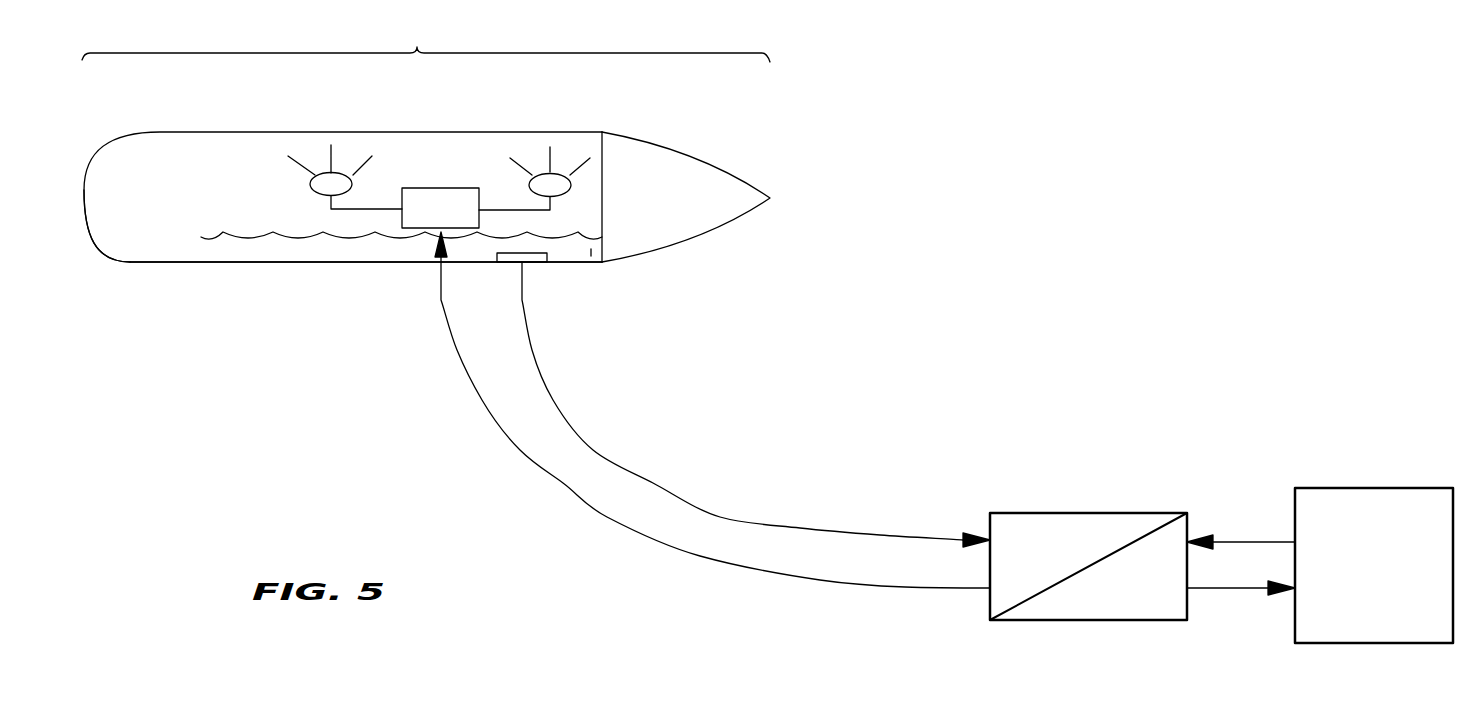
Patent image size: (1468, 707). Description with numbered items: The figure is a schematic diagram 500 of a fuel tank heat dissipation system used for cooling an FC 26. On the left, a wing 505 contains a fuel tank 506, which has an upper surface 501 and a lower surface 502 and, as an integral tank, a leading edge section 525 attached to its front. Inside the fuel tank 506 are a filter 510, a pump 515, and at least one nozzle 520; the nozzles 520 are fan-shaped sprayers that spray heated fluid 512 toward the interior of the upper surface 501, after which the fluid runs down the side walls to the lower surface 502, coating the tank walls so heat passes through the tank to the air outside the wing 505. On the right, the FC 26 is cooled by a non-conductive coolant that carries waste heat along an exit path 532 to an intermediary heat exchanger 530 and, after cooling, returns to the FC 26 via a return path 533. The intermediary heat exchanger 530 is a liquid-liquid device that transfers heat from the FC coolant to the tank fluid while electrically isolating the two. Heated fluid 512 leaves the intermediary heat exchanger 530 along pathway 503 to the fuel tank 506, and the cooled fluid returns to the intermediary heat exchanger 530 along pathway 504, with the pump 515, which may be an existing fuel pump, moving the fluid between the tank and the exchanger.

The schematic diagram 500 is at (1045, 105).
The wing 505 is at (426, 41).
The upper surface 501 is at (222, 129).
The lower surface 502 is at (220, 263).
The leading edge section 525 is at (110, 258).
The fuel tank 506 is at (605, 187).
The nozzle 520 is at (320, 196).
The pump 515 is at (407, 230).
The filter 510 is at (533, 263).
The heated fluid 512 is at (593, 263).
The pathway 503 is at (588, 517).
The pathway 504 is at (655, 480).
The intermediary heat exchanger 530 is at (1090, 620).
The exit path 532 is at (1237, 542).
The return path 533 is at (1233, 588).
The FC 26 is at (1338, 643).